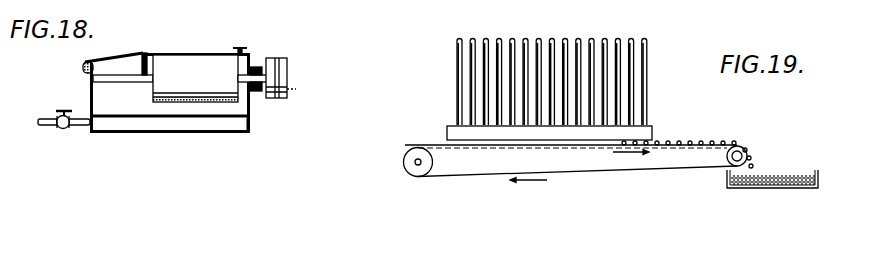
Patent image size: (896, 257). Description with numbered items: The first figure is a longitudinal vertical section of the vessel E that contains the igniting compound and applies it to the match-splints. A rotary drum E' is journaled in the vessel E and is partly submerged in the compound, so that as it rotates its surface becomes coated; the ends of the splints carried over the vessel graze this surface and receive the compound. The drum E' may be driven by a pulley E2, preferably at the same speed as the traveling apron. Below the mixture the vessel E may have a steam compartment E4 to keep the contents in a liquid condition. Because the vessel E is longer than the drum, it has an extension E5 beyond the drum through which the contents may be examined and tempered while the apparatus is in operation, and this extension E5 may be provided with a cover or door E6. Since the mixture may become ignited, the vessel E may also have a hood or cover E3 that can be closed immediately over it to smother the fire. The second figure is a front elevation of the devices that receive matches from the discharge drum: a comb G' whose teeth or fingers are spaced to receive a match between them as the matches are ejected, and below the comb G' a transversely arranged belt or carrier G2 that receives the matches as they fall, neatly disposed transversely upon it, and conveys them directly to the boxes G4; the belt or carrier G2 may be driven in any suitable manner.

In FIG. 18, the vessel E is at (179, 93).
In FIG. 18, the rotary drum E' is at (195, 78).
In FIG. 18, the pulley E2 is at (267, 68).
In FIG. 18, the hood or cover E3 is at (170, 53).
In FIG. 18, the steam compartment E4 is at (150, 123).
In FIG. 18, the extension E5 is at (169, 98).
In FIG. 18, the cover or door E6 is at (110, 63).
In FIG. 19, the comb G' is at (560, 90).
In FIG. 19, the belt or carrier G2 is at (576, 164).
In FIG. 19, the boxes G4 is at (772, 168).